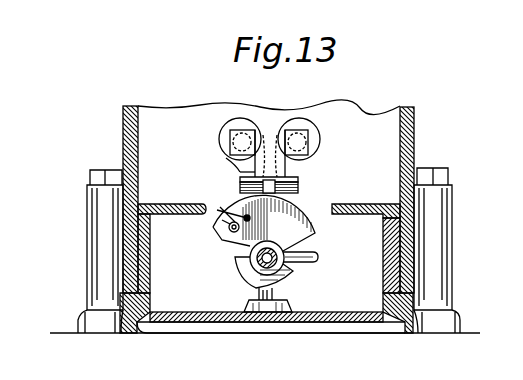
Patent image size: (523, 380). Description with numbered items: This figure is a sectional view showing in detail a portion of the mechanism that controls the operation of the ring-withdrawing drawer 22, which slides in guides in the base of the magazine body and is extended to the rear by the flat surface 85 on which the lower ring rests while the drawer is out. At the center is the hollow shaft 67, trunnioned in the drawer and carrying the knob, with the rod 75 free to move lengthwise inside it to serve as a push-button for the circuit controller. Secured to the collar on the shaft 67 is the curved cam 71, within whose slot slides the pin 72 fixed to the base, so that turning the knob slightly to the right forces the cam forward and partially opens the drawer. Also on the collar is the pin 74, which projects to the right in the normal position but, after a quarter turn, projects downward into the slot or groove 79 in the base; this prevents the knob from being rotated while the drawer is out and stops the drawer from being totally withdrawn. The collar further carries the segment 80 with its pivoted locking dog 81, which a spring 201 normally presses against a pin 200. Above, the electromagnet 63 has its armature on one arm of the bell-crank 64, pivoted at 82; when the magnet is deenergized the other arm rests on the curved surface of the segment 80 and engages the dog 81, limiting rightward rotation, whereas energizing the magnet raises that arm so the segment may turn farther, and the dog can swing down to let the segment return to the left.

The ring-withdrawing drawer 22 is at (150, 242).
The electromagnet 63 is at (318, 133).
The bell-crank 64 is at (298, 180).
The shaft 67 is at (251, 255).
The curved cam 71 is at (291, 279).
The pin 72 is at (259, 296).
The pin 74 is at (320, 259).
The rod 75 is at (257, 260).
The slot or groove 79 is at (292, 304).
The segment 80 is at (264, 223).
The locking dog 81 is at (231, 210).
The pivot of bell-crank 82 is at (236, 164).
The flat surface 85 is at (193, 204).
The pin 200 is at (222, 220).
The spring 201 is at (244, 171).